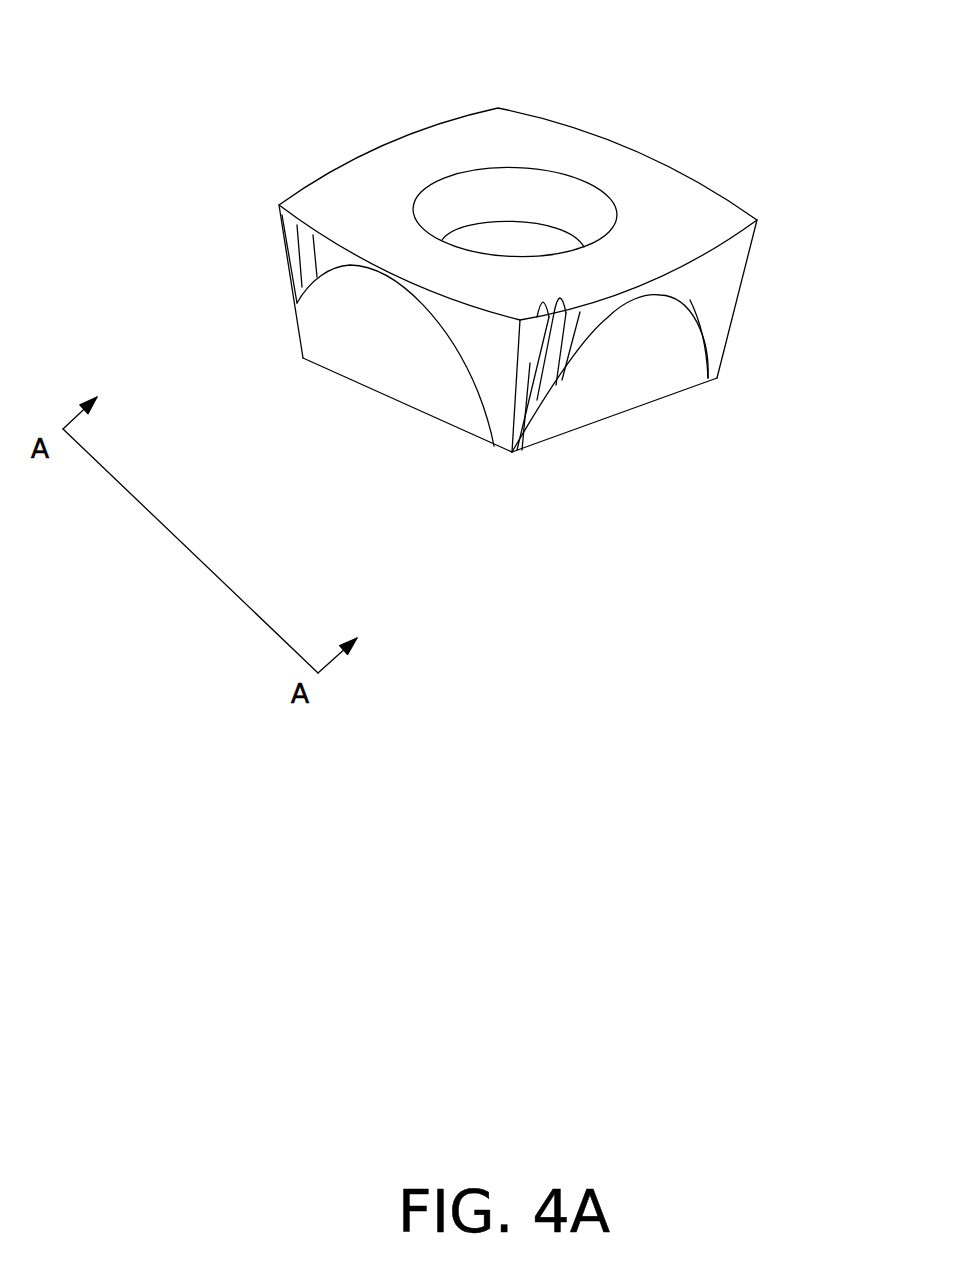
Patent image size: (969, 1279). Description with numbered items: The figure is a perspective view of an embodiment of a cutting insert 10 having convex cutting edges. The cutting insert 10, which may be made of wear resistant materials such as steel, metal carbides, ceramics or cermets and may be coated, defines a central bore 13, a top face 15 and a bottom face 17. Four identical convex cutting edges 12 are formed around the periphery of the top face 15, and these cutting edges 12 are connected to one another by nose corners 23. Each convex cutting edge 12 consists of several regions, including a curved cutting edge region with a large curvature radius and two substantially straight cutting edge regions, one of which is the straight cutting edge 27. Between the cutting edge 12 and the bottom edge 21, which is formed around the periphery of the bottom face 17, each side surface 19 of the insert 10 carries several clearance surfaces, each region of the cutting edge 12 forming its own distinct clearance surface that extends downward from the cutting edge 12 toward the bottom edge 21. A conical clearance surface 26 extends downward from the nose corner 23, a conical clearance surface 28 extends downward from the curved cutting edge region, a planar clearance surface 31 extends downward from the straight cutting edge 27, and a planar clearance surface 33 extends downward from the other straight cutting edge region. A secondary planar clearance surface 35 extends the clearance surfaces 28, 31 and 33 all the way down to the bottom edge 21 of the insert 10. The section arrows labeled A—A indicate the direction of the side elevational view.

The cutting insert 10 is at (748, 180).
The cutting edge 12 is at (407, 138).
The central bore 13 is at (472, 187).
The top face 15 is at (641, 365).
The bottom face 17 is at (318, 386).
The side surface 19 is at (280, 340).
The bottom edge 21 is at (445, 427).
The nose corner 23 is at (497, 108).
The conical clearance surface 26 is at (511, 455).
The straight cutting edge region 27 is at (598, 312).
The conical clearance surface 28 is at (703, 307).
The planar clearance surface 31 is at (293, 237).
The planar clearance surface 33 is at (307, 252).
The secondary planar clearance surface 35 is at (382, 370).